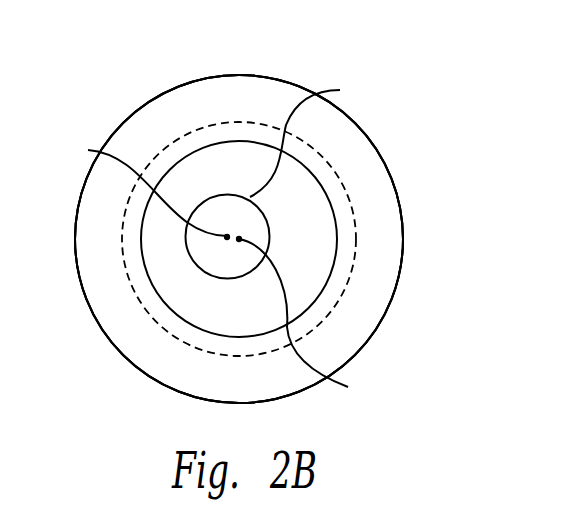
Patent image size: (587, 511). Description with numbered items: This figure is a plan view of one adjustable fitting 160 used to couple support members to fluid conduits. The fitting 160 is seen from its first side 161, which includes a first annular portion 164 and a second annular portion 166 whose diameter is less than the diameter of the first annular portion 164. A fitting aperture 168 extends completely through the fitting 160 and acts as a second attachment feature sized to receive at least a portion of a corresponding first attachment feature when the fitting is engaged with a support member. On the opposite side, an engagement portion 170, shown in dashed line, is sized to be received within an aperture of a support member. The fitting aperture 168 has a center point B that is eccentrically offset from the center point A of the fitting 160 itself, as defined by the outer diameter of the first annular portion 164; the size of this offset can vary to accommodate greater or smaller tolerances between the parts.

The adjustable fitting 160 is at (410, 142).
The first side 161 is at (262, 77).
The first annular portion 164 is at (387, 270).
The second annular portion 166 is at (312, 270).
The fitting aperture 168 is at (283, 178).
The engagement portion 170 is at (357, 217).
The center point of the fitting A is at (301, 320).
The center point of the fitting aperture B is at (149, 189).